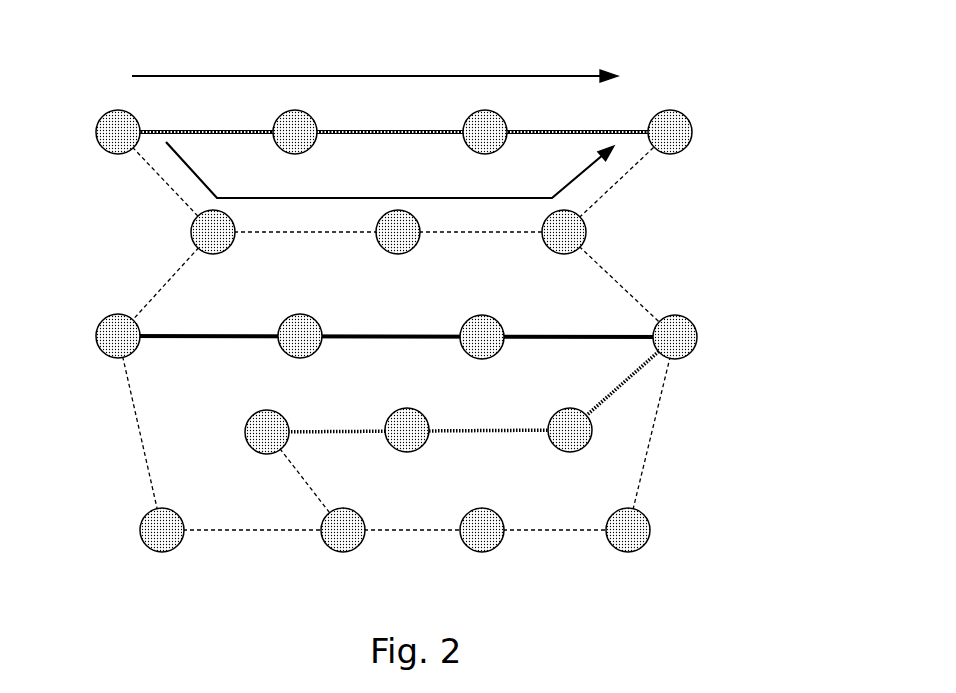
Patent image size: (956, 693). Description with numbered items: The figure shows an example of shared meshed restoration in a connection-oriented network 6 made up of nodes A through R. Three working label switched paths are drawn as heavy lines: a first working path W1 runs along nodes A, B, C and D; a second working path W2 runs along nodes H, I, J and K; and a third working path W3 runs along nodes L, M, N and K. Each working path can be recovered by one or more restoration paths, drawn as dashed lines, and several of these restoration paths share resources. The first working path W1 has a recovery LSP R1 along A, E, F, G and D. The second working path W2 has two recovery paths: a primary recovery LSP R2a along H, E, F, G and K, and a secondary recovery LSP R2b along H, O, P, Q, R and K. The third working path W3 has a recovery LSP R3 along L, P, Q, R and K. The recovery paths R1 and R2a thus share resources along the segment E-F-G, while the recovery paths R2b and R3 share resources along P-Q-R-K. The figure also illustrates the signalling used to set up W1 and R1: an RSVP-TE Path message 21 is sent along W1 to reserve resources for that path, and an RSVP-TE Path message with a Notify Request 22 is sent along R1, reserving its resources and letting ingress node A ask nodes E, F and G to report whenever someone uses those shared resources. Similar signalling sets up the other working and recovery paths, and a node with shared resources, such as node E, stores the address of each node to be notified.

The connection-oriented network 6 is at (758, 108).
The RSVP-TE Path message 21 is at (412, 73).
The RSVP-TE Path message with a Notify Request 22 is at (513, 198).
The first working path W1 is at (365, 128).
The second working path W2 is at (377, 333).
The third working path W3 is at (327, 429).
The recovery LSP R1 is at (160, 175).
The primary recovery LSP R2a is at (175, 270).
The secondary recovery LSP R2b is at (137, 465).
The recovery LSP R3 is at (317, 498).